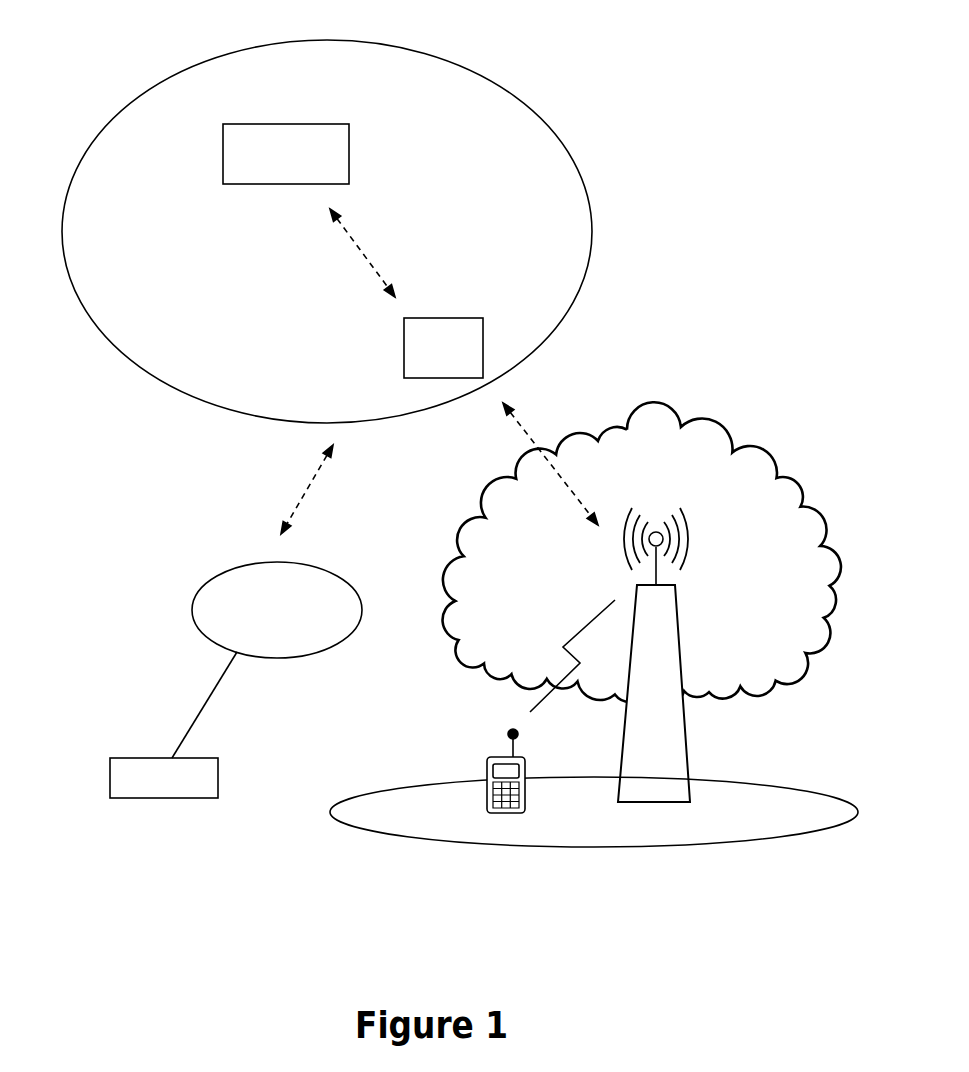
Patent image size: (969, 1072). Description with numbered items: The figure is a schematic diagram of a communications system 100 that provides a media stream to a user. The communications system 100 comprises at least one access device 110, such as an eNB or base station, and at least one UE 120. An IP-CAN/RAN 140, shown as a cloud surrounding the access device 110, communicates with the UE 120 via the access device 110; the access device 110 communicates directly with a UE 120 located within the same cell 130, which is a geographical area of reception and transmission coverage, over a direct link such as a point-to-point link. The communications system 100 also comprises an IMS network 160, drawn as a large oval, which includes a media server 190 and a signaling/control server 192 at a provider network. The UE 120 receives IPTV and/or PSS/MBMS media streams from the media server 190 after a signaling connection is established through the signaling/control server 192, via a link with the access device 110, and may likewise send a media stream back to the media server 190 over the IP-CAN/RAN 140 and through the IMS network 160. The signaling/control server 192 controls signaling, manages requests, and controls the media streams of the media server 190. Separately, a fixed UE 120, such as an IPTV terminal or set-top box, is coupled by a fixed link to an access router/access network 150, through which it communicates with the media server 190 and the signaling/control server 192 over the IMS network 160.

The communications system 100 is at (636, 338).
The access device 110 is at (677, 597).
The UE 120 is at (120, 758).
The cell 130 is at (553, 850).
The IP-CAN/RAN 140 is at (717, 425).
The access router/access network 150 is at (233, 567).
The IMS network 160 is at (520, 100).
The media server 190 is at (330, 124).
The signaling/control server 192 is at (463, 318).